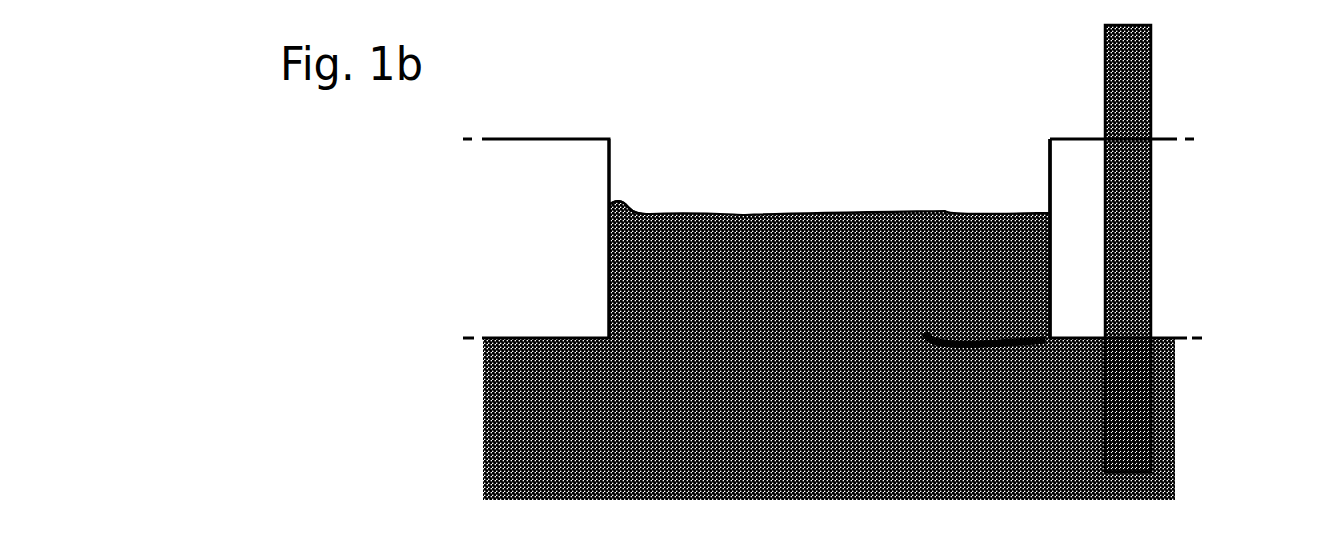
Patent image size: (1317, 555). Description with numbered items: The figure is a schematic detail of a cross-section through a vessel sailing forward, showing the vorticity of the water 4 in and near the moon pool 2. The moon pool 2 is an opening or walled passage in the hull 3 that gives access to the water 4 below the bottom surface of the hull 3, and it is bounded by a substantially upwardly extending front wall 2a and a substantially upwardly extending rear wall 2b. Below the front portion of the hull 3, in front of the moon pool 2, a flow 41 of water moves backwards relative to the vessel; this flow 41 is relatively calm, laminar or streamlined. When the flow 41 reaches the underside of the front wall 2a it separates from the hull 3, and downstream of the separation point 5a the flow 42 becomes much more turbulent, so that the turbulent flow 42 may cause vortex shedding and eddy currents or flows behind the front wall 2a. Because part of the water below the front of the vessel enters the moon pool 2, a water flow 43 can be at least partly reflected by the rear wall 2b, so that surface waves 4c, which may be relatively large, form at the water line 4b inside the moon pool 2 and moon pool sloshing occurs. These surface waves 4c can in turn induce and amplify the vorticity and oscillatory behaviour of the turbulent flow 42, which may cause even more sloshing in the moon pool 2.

The moon pool 2 is at (890, 130).
The front wall 2a is at (1048, 160).
The rear wall 2b is at (611, 164).
The hull 3 is at (527, 167).
The water 4 is at (839, 469).
The water line 4b is at (829, 212).
The surface waves 4c is at (638, 208).
The separation point 5a is at (1048, 340).
The flow 41 is at (1163, 353).
The turbulent flow 42 is at (983, 318).
The water flow 43 is at (638, 287).